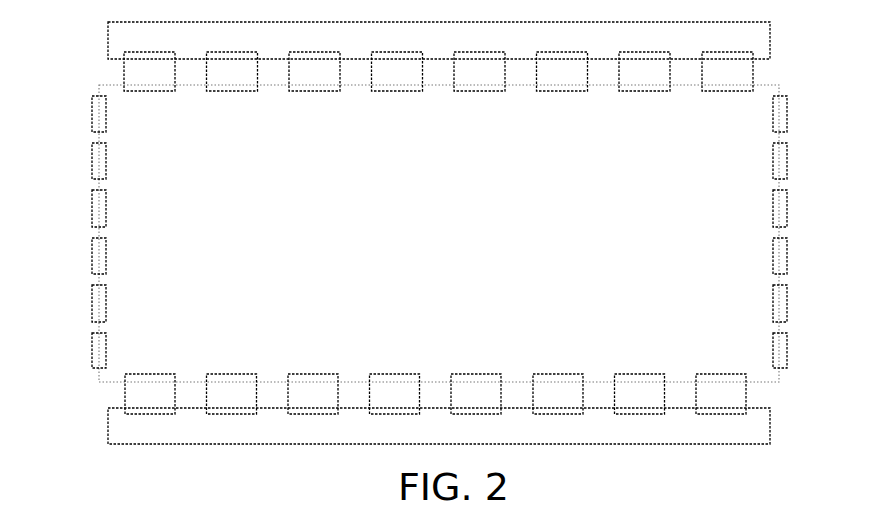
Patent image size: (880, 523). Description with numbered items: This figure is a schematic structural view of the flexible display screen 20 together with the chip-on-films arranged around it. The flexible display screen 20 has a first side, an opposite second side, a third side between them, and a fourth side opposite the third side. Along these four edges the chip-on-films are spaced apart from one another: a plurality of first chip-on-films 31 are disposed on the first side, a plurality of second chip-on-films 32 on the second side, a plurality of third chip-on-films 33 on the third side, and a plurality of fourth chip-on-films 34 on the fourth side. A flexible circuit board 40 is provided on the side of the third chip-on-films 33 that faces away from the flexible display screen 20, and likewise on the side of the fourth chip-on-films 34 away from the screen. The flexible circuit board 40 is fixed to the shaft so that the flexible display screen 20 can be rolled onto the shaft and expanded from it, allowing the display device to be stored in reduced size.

The flexible display screen 20 is at (103, 230).
The first chip-on-films 31 is at (97, 163).
The second chip-on-films 32 is at (783, 162).
The third chip-on-films 33 is at (743, 80).
The fourth chip-on-films 34 is at (738, 402).
The flexible circuit board 40 is at (758, 35).